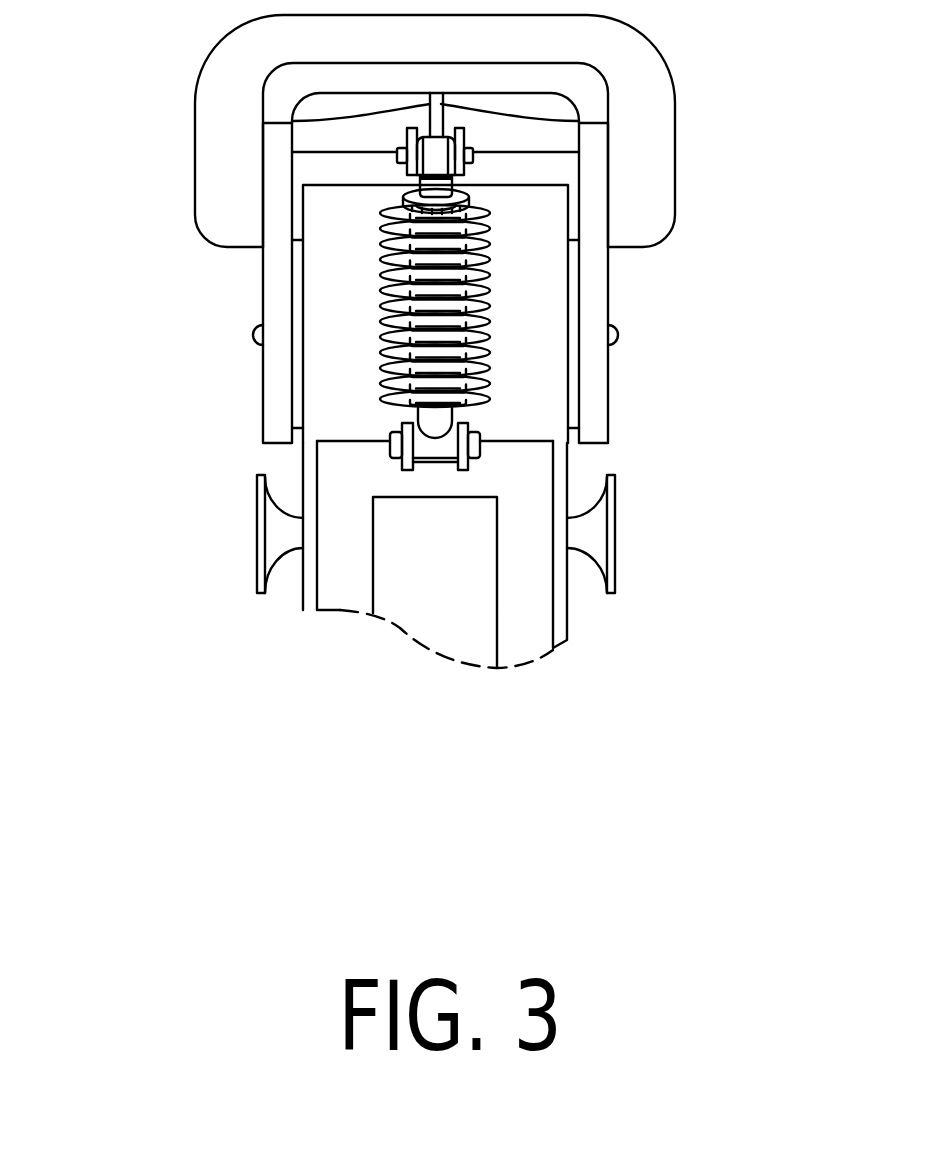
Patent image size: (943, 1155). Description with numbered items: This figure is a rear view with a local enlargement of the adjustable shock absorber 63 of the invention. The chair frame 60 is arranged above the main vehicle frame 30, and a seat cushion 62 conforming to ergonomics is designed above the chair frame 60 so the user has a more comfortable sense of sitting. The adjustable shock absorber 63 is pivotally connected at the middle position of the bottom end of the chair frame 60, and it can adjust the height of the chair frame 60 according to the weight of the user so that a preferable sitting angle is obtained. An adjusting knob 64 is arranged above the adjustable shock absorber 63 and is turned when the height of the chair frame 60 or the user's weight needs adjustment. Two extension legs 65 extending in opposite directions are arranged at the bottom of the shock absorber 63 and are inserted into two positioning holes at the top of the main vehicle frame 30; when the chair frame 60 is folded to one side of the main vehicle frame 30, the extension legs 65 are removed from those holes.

The main vehicle frame 30 is at (542, 622).
The chair frame 60 is at (340, 279).
The seat cushion 62 is at (658, 178).
The adjustable shock absorber 63 is at (487, 398).
The adjusting knob 64 is at (462, 197).
The extension legs 65 is at (397, 449).